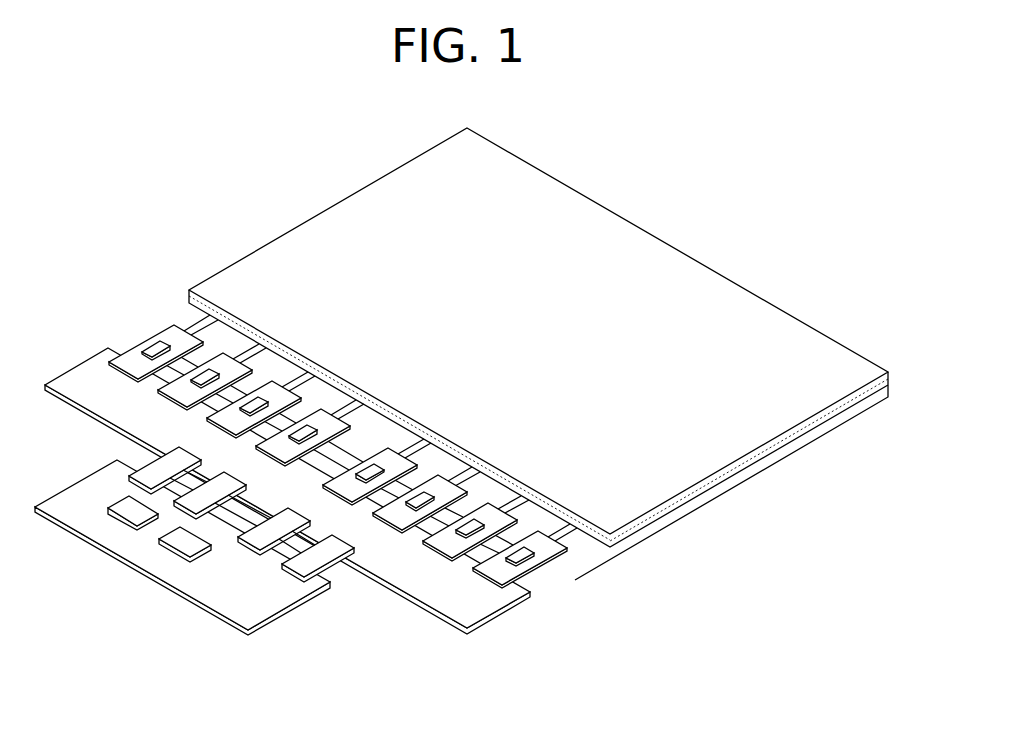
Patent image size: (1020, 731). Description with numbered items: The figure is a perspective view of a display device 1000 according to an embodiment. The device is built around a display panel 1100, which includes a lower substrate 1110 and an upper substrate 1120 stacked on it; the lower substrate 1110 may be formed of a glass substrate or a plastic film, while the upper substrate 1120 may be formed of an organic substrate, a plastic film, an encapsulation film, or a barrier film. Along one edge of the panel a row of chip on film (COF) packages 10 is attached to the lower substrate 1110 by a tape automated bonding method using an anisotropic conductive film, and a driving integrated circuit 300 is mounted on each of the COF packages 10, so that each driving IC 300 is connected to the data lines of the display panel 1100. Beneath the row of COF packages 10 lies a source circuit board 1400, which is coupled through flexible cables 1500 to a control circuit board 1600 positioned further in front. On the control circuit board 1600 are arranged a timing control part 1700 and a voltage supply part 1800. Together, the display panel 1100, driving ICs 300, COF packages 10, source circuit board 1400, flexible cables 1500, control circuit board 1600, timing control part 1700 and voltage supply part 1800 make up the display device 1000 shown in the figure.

The display device 1000 is at (716, 192).
The display panel 1100 is at (538, 371).
The lower substrate 1110 is at (692, 515).
The upper substrate 1120 is at (748, 455).
The chip on film (COF) package 10 is at (548, 563).
The driving integrated circuit (IC) 300 is at (528, 590).
The source circuit board 1400 is at (468, 597).
The flexible cable 1500 is at (313, 555).
The control circuit board 1600 is at (262, 603).
The timing control part 1700 is at (183, 540).
The voltage supply part 1800 is at (130, 510).